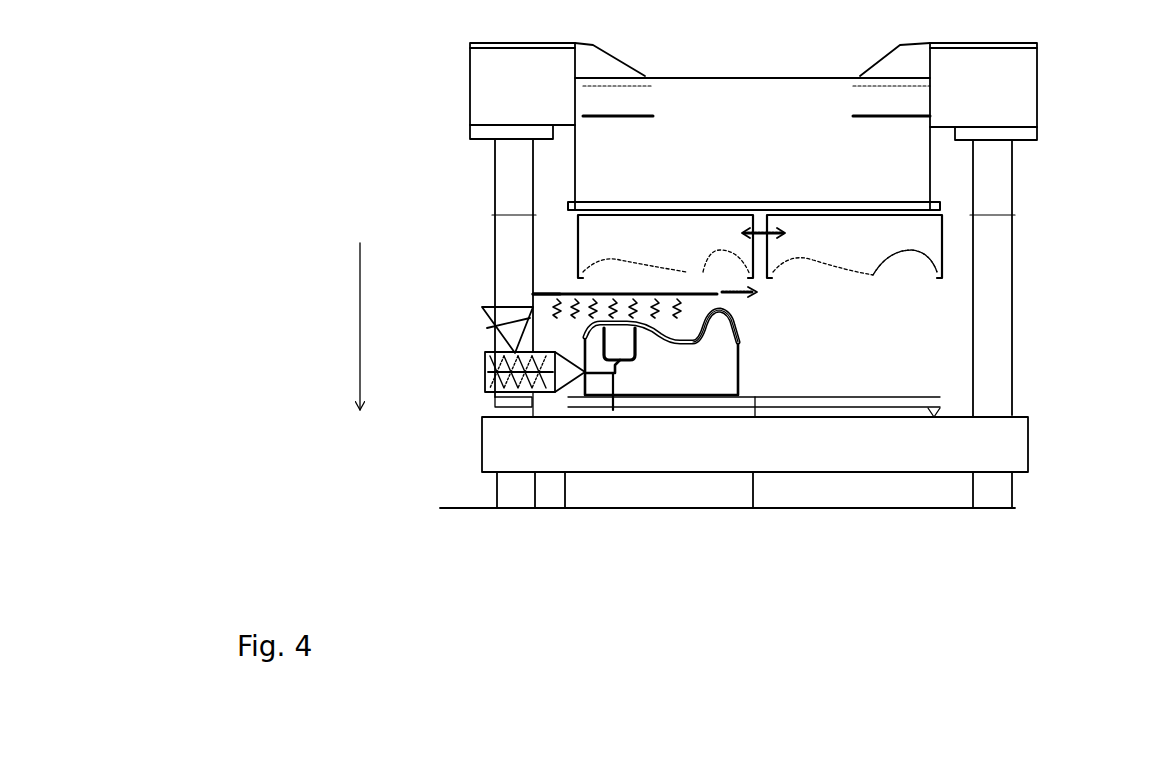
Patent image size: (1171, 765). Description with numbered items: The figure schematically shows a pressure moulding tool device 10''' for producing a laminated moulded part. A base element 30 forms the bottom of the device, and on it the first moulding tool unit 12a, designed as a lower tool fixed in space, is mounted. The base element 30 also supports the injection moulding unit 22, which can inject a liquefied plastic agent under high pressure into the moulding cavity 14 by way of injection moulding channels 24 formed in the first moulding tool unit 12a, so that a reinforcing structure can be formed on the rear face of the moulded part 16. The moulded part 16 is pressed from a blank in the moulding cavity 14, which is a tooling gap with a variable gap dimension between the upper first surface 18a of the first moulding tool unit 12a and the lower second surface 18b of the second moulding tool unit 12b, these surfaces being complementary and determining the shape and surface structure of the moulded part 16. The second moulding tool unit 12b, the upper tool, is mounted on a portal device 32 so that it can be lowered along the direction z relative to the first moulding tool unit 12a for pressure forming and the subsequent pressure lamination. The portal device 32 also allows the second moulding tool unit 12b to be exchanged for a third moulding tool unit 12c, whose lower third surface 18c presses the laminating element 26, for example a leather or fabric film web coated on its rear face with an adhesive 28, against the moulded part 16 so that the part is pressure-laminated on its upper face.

The pressure moulding tool device 10''' is at (643, 258).
The first moulding tool unit 12a is at (723, 375).
The second moulding tool unit 12b is at (664, 240).
The third moulding tool unit 12c is at (878, 260).
The moulding cavity 14 is at (636, 288).
The moulded part 16 is at (684, 324).
The first surface 18a is at (726, 328).
The second surface 18b is at (666, 271).
The third surface 18c is at (828, 260).
The injection moulding unit 22 is at (477, 367).
The injection moulding channels 24 is at (613, 405).
The laminating element 26 is at (547, 270).
The adhesive 28 is at (600, 327).
The base element 30 is at (788, 444).
The portal device 32 is at (990, 280).